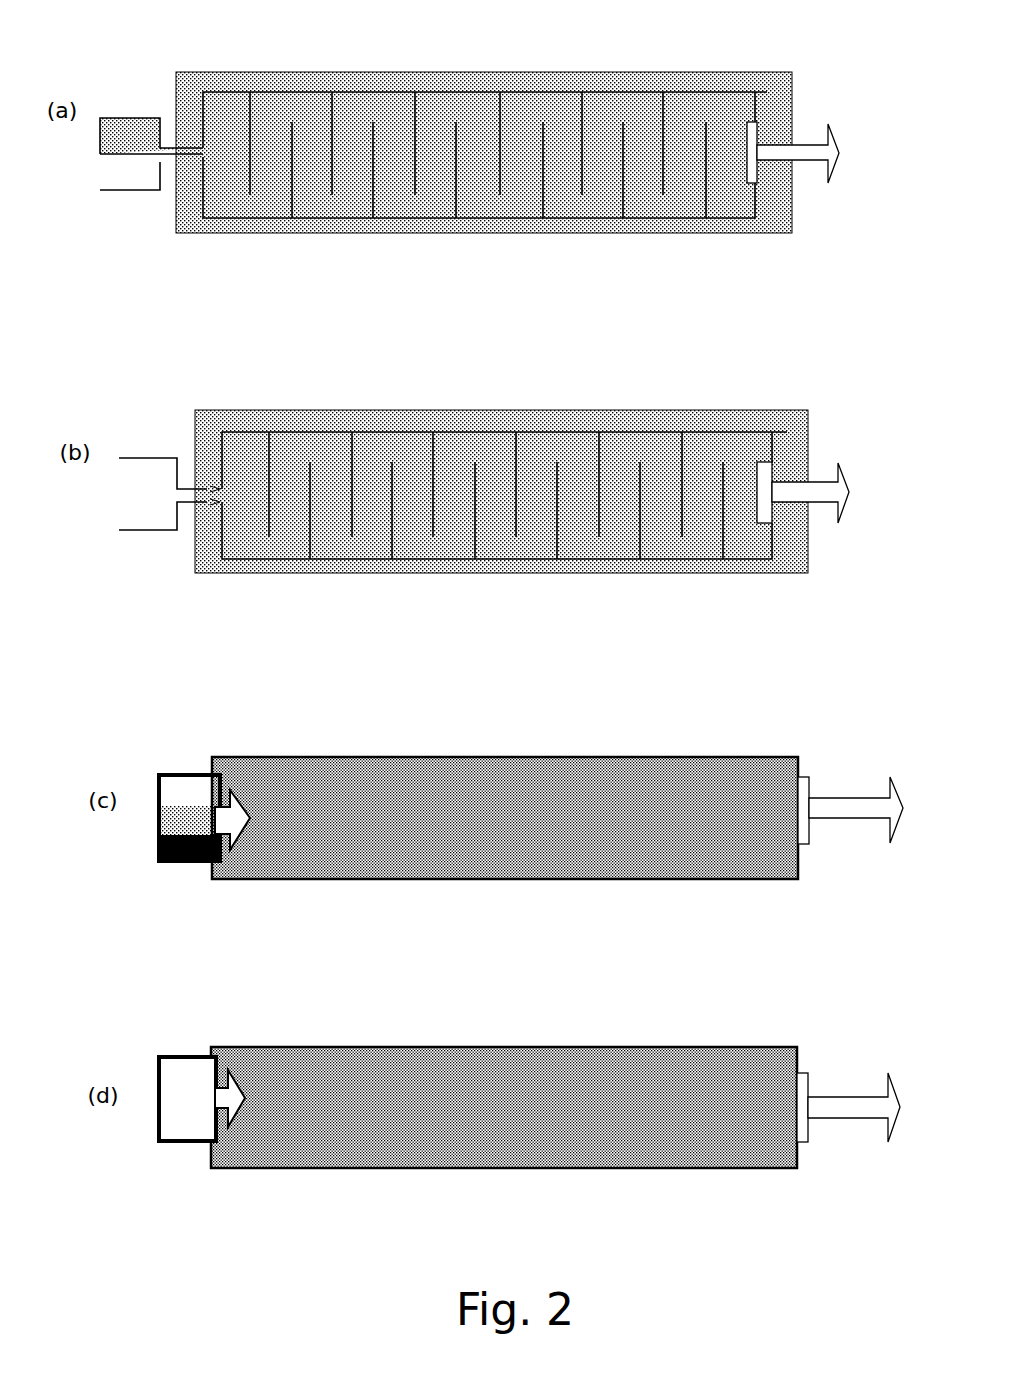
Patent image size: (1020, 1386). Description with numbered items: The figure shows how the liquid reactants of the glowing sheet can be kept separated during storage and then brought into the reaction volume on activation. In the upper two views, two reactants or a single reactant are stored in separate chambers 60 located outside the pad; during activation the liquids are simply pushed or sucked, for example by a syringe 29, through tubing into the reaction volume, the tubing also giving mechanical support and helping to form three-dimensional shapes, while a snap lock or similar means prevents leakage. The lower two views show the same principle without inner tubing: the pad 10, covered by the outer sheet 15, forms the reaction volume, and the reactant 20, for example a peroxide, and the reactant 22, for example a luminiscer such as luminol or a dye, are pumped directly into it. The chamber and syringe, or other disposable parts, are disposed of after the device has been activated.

The pad 10 is at (573, 832).
The outer sheet 15 is at (488, 883).
The reactant 20 is at (195, 778).
The reactant 22 is at (195, 863).
The syringe 29 is at (196, 142).
The chamber 60 is at (128, 200).